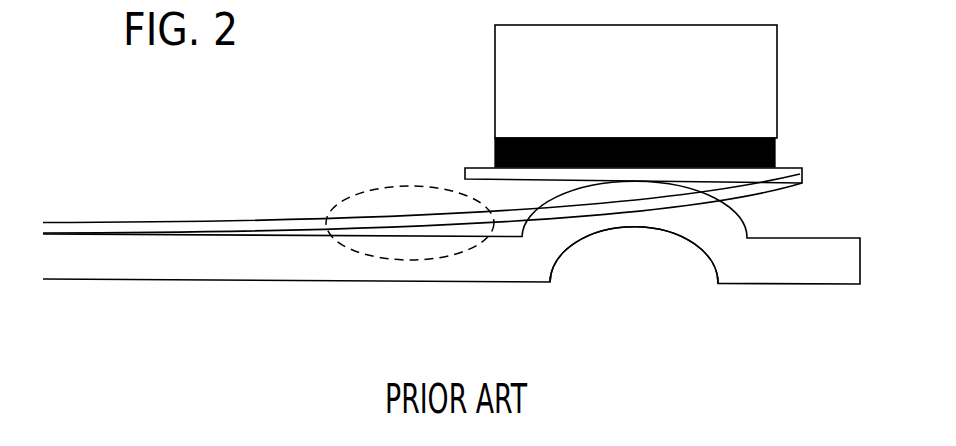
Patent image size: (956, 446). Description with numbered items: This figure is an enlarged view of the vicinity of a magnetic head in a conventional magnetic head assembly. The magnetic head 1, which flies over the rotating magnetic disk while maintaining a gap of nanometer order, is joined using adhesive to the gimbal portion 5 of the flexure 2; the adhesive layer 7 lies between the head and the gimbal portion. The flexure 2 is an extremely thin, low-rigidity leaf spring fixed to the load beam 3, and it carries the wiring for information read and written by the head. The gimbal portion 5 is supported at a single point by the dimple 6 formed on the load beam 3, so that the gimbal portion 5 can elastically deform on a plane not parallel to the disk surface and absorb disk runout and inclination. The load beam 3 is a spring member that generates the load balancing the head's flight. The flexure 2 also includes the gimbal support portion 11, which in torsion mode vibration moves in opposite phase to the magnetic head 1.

The magnetic head 1 is at (777, 50).
The flexure 2 is at (212, 222).
The load beam 3 is at (155, 279).
The gimbal portion 5 is at (465, 168).
The dimple 6 is at (633, 242).
The adhesive layer 7 is at (777, 153).
The gimbal support portion 11 is at (407, 263).